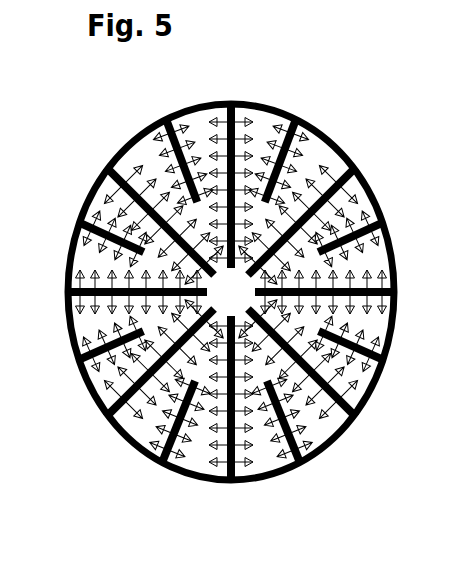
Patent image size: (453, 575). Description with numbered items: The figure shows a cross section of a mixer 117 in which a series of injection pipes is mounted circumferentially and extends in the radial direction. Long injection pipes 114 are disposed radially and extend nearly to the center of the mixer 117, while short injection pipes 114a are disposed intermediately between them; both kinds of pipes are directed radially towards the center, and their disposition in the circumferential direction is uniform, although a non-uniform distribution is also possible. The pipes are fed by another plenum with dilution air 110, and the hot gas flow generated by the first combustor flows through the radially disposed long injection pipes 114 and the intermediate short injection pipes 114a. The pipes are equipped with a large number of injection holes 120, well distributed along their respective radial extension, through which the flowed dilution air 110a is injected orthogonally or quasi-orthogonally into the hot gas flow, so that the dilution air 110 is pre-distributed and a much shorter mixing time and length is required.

The dilution air 110 is at (232, 90).
The flowed dilution air 110a is at (107, 172).
The long injection pipes 114 is at (230, 484).
The short injection pipes 114a is at (295, 467).
The mixer 117 is at (285, 110).
The injection holes 120 is at (129, 440).